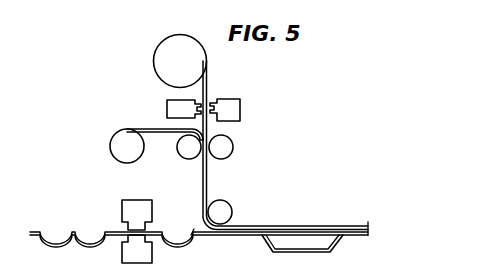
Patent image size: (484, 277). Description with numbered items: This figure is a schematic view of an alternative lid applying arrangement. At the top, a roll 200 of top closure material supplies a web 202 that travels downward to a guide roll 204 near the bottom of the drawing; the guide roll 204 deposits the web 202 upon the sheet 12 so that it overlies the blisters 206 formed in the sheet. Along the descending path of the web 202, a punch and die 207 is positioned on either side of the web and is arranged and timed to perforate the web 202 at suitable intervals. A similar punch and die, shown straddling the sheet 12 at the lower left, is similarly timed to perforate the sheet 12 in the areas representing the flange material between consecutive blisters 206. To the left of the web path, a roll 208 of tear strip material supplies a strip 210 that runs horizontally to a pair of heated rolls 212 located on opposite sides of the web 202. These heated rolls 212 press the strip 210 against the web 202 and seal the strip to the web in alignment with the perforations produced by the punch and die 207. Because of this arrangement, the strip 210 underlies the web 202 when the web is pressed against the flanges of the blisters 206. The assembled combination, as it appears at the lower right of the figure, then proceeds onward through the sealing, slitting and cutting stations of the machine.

The sheet 12 is at (184, 245).
The roll of top closure material 200 is at (154, 62).
The web 202 is at (210, 127).
The guide roll 204 is at (232, 206).
The blisters 206 is at (332, 252).
The punch and die 207 is at (218, 100).
The roll of tear strip material 208 is at (113, 155).
The strip 210 is at (146, 128).
The heated rolls 212 is at (218, 158).